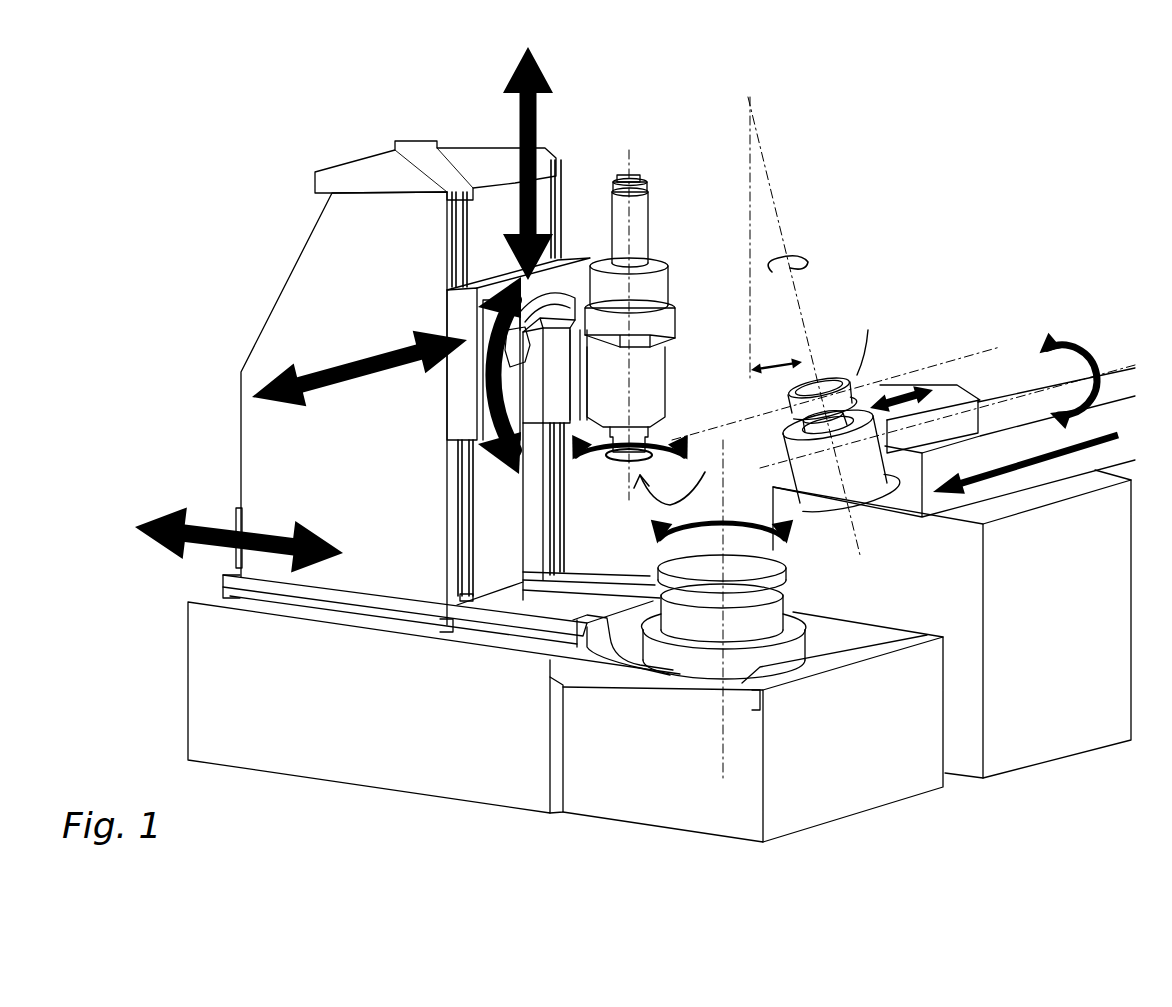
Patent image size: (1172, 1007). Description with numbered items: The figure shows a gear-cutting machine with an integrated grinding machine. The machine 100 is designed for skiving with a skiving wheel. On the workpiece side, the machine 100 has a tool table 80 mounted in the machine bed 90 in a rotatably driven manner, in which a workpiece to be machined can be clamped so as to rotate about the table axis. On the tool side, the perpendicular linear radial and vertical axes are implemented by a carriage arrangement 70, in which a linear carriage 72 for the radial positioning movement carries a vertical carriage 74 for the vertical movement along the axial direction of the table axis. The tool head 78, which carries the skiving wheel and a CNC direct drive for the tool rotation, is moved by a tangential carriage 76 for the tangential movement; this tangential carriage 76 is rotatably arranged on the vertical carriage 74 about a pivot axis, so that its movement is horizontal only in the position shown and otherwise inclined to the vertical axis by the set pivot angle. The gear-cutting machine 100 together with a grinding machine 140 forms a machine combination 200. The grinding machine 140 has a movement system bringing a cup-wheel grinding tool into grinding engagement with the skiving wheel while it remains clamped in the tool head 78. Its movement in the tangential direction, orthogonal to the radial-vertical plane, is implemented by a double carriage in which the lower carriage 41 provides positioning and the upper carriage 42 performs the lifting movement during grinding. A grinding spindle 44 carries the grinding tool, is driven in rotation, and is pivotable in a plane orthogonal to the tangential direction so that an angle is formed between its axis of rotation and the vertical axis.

The machine 100 is at (252, 172).
The carriage arrangement 70 is at (183, 270).
The linear carriage 72 is at (441, 392).
The vertical carriage 74 is at (572, 278).
The tangential carriage 76 is at (555, 459).
The tool head 78 is at (630, 325).
The tool table 80 is at (735, 610).
The machine bed 90 is at (565, 722).
The machine combination 200 is at (994, 105).
The grinding machine 140 is at (975, 305).
The lower carriage 41 is at (954, 442).
The upper carriage 42 is at (926, 409).
The grinding spindle 44 is at (842, 405).